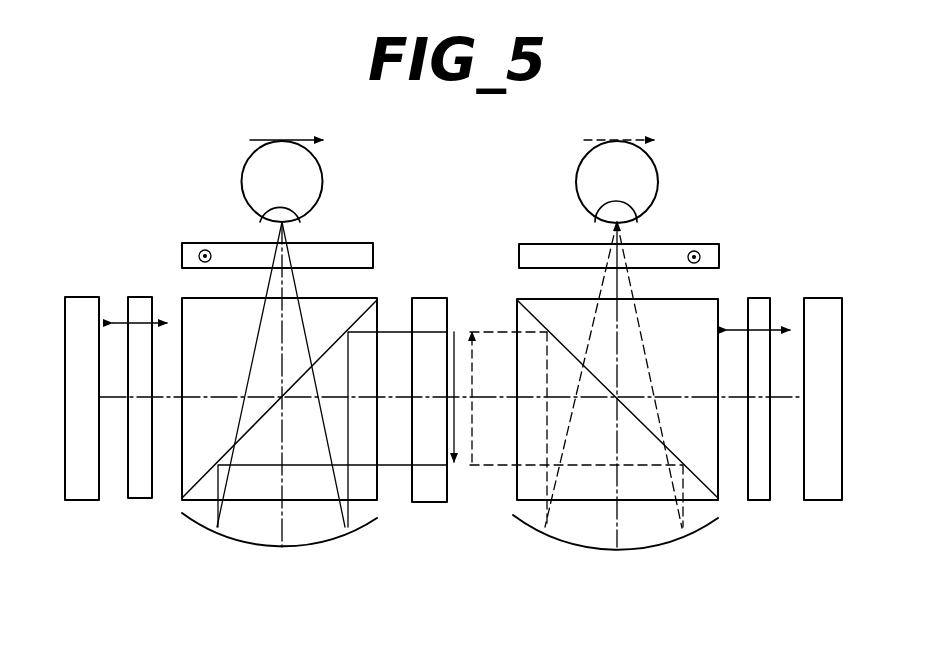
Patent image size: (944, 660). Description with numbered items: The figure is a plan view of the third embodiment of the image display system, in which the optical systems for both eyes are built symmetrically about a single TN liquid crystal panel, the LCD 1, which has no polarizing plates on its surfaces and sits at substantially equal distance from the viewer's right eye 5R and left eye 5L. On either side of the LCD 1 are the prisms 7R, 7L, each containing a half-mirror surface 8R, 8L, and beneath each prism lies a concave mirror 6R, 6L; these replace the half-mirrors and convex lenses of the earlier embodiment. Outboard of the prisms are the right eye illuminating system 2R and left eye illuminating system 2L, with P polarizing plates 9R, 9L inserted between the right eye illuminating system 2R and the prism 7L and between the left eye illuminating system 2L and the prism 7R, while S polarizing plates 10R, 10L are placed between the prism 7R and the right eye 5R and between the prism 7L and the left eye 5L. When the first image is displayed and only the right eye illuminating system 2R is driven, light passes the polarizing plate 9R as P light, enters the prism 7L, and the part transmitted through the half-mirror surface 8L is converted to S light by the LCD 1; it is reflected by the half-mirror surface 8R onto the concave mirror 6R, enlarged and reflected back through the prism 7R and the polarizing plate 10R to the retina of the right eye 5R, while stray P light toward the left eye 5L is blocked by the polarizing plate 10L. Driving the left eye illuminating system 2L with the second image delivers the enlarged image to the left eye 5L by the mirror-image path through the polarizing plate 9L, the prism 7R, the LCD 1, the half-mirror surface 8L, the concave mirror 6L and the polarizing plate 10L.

The liquid crystal panel (LCD) 1 is at (433, 502).
The left eye illuminating system 2L is at (82, 500).
The right eye illuminating system 2R is at (826, 500).
The left eye 5L is at (659, 178).
The right eye 5R is at (242, 178).
The concave mirror 6L is at (642, 547).
The concave mirror 6R is at (305, 547).
The prism 7L is at (720, 298).
The prism 7R is at (187, 298).
The half-mirror surface 8L is at (706, 498).
The half-mirror surface 8R is at (190, 498).
The polarizing plate 9L is at (137, 500).
The polarizing plate 9R is at (760, 500).
The polarizing plate 10L is at (713, 244).
The polarizing plate 10R is at (190, 243).